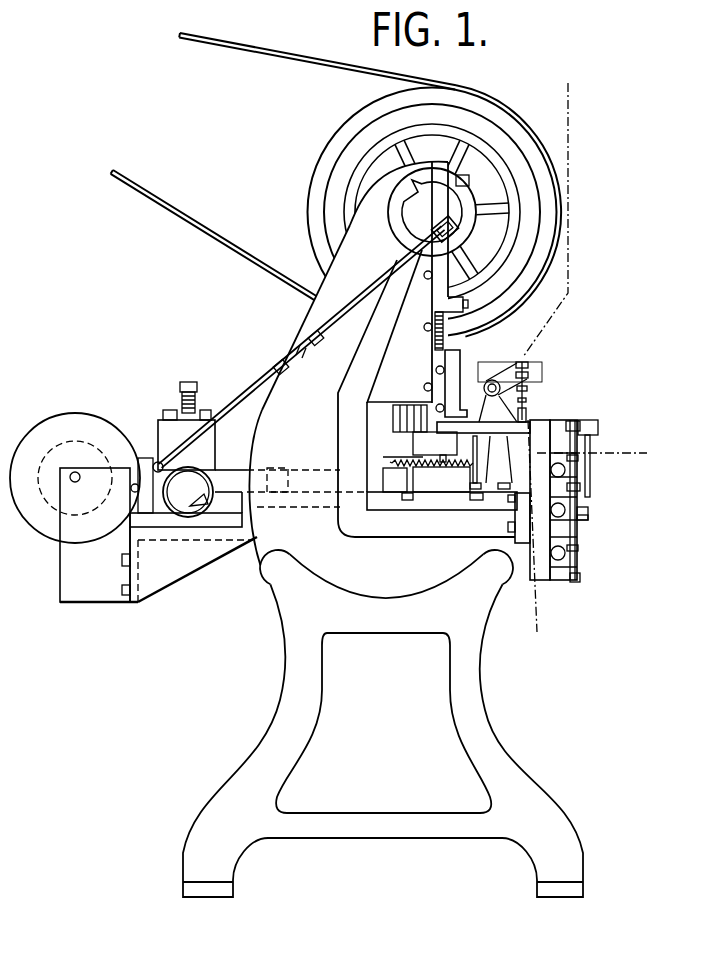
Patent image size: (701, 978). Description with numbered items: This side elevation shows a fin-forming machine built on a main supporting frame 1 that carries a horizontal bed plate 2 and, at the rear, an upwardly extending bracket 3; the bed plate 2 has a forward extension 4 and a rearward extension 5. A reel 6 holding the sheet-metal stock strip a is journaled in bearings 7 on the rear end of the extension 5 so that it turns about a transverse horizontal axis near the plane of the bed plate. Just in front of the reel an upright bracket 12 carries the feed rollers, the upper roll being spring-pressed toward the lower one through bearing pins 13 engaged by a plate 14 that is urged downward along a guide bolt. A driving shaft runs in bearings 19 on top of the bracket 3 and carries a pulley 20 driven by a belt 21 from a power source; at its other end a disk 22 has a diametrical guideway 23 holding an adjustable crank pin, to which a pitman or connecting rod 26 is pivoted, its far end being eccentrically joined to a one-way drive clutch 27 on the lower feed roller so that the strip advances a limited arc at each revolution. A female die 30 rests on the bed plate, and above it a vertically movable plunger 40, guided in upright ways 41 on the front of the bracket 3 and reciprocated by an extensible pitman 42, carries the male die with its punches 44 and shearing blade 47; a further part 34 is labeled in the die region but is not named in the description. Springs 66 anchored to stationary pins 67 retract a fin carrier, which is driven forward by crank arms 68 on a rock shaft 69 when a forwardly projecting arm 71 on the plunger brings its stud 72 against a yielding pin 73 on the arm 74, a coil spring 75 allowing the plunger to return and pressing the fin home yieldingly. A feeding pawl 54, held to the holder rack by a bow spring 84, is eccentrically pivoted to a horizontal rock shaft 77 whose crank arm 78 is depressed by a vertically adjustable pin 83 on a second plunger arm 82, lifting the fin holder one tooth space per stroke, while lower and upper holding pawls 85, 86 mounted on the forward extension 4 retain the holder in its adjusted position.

The main supporting frame 1 is at (310, 553).
The bed plate 2 is at (433, 524).
The bracket 3 is at (342, 273).
The forward extension 4 is at (517, 592).
The rearward extension 5 is at (147, 583).
The reel 6 is at (67, 418).
The bearings 7 is at (75, 482).
The upright bracket 12 is at (160, 424).
The bearing pins 13 is at (197, 406).
The plate 14 is at (183, 406).
The bearings 19 is at (470, 181).
The pulley 20 is at (545, 182).
The belt 21 is at (266, 50).
The disk 22 is at (418, 210).
The guideway 23 is at (433, 220).
The pitman or connecting rod 26 is at (254, 388).
The one-way drive clutch 27 is at (198, 478).
The female die 30 is at (440, 476).
The rack 34 is at (432, 458).
The plunger 40 is at (454, 368).
The upright ways 41 is at (423, 361).
The extensible pitman 42 is at (448, 314).
The punches 44 is at (420, 452).
The shearing blade 47 is at (482, 462).
The feeding pawl 54 is at (527, 500).
The springs 66 is at (432, 476).
The stationary pins 67 is at (390, 462).
The crank arms 68 is at (528, 410).
The rock shaft 69 is at (484, 386).
The forwardly projecting arm 71 is at (541, 421).
The stud or pin 72 is at (528, 393).
The yielding pin 73 is at (528, 382).
The arm 74 is at (524, 363).
The coil spring 75 is at (517, 370).
The horizontal rock shaft 77 is at (570, 503).
The crank arm 78 is at (588, 518).
The forwardly projecting arm 82 is at (598, 427).
The vertically adjustable pin 83 is at (590, 446).
The bow spring 84 is at (577, 488).
The lower holding pawl or detent 85 is at (570, 540).
The upper holding pawl or detent 86 is at (558, 452).
The stock strip a is at (142, 479).